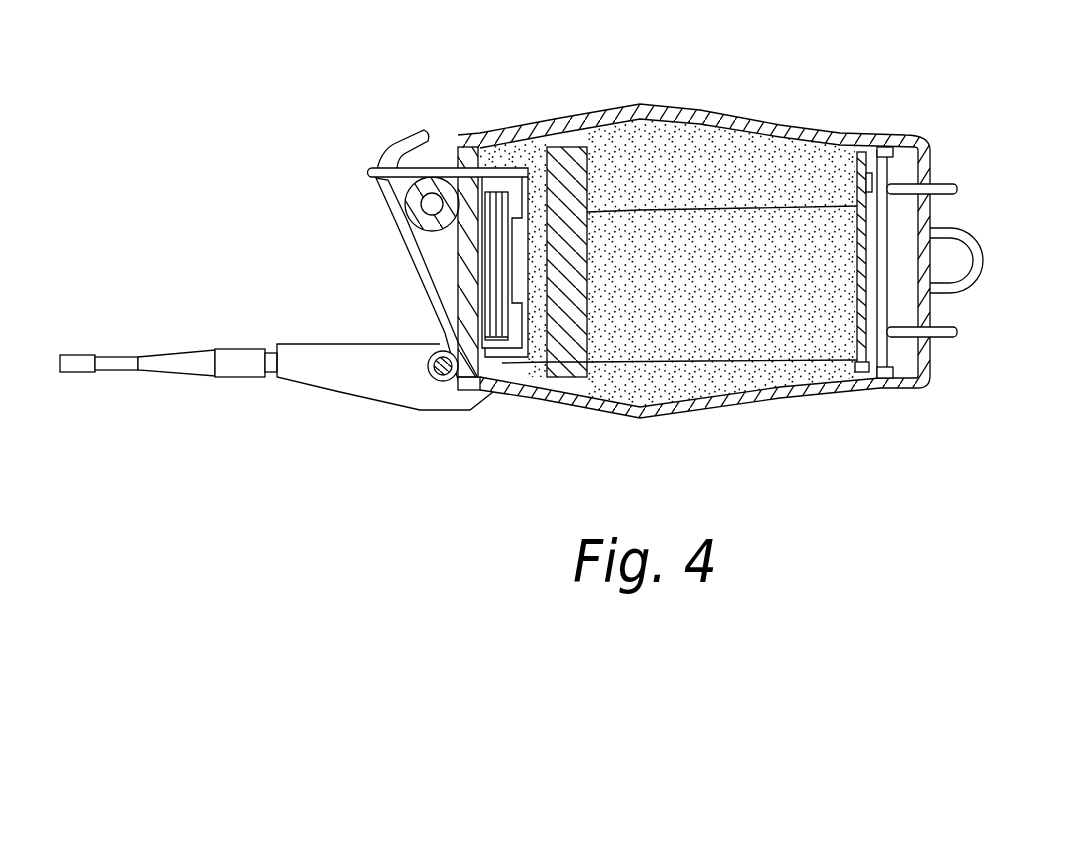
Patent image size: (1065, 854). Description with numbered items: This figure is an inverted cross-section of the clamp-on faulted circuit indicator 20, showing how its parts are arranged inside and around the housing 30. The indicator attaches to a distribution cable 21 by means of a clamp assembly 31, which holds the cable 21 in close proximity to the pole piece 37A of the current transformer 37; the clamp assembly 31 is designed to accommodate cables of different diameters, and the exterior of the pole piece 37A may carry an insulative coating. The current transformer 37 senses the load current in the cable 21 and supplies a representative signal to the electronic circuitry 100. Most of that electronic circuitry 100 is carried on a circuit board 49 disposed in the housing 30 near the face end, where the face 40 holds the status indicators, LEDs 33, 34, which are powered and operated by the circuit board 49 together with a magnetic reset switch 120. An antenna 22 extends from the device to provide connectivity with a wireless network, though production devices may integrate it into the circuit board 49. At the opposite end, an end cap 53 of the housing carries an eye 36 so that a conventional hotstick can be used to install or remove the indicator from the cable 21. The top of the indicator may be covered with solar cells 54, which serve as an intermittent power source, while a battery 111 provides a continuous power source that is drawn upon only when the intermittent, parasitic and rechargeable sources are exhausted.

The faulted circuit indicator 20 is at (742, 117).
The cable 21 is at (437, 228).
The antenna 22 is at (77, 360).
The housing 30 is at (494, 138).
The clamp assembly 31 is at (396, 142).
The LED 33 is at (956, 184).
The LED 34 is at (960, 333).
The eye 36 is at (975, 242).
The current transformer 37 is at (516, 226).
The pole piece 37A is at (367, 173).
The face 40 is at (933, 367).
The circuit board 49 is at (857, 328).
The end cap 53 is at (905, 137).
The solar cells 54 is at (456, 278).
The electronic circuitry 100 is at (858, 373).
The battery 111 is at (567, 345).
The magnetic reset switch 120 is at (861, 150).